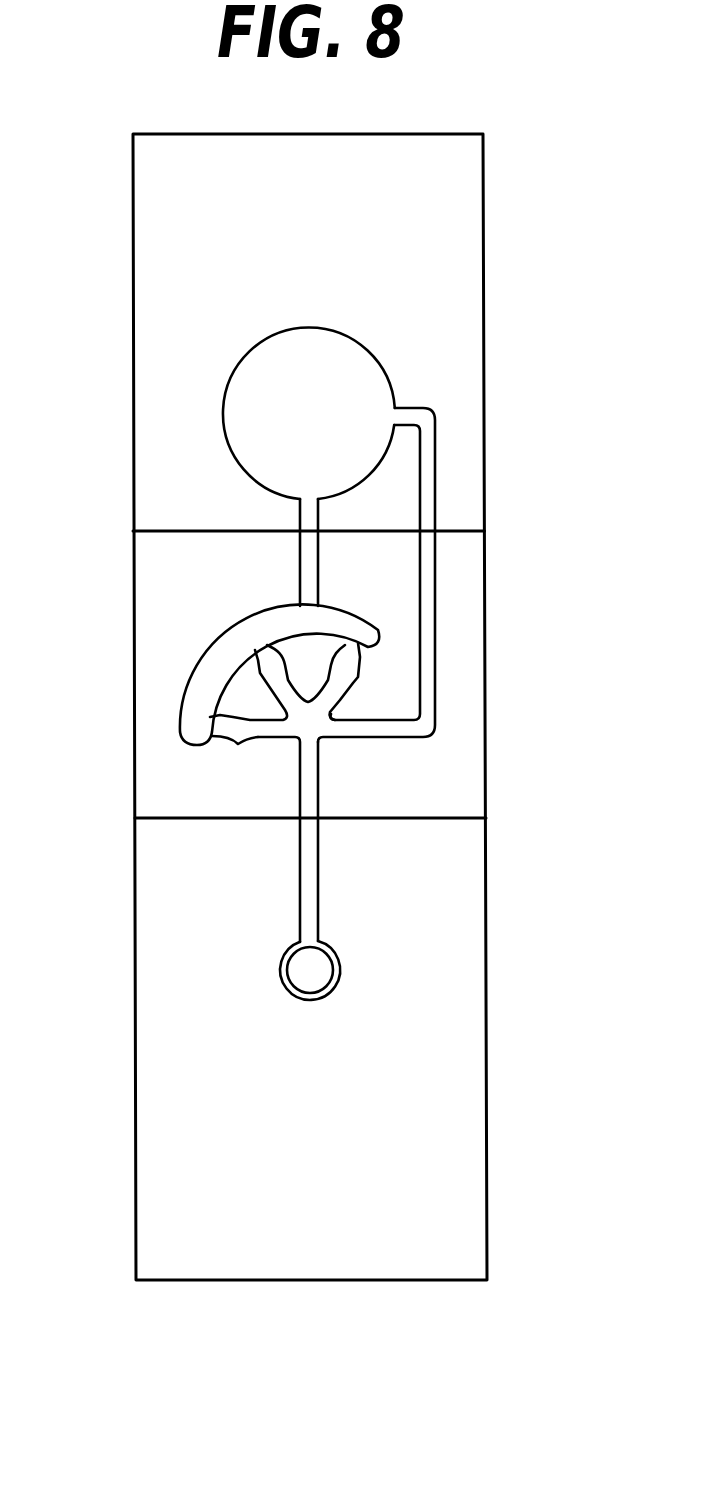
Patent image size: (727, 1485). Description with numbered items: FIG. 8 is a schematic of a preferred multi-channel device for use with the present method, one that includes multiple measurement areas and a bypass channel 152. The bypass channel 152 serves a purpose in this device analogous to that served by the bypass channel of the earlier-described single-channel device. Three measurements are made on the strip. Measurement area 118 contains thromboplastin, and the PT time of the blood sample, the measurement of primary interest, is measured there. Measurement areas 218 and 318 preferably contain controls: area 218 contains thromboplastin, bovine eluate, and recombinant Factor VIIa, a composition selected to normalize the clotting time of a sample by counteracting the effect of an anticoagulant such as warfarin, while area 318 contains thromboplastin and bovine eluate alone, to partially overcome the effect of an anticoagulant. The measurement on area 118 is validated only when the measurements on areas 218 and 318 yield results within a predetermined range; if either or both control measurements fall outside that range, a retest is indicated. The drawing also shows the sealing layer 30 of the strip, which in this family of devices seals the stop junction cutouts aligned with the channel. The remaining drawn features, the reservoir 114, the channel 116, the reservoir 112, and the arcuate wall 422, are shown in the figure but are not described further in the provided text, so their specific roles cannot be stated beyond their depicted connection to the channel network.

The sealing layer 30 is at (472, 557).
The sample reservoir 114 is at (380, 362).
The bypass channel 152 is at (436, 475).
The main channel 116 is at (318, 903).
The outlet reservoir 112 is at (340, 973).
The arcuate wall 422 is at (360, 612).
The measurement area 318 is at (358, 677).
The measurement area 218 is at (228, 683).
The measurement area 118 is at (237, 745).